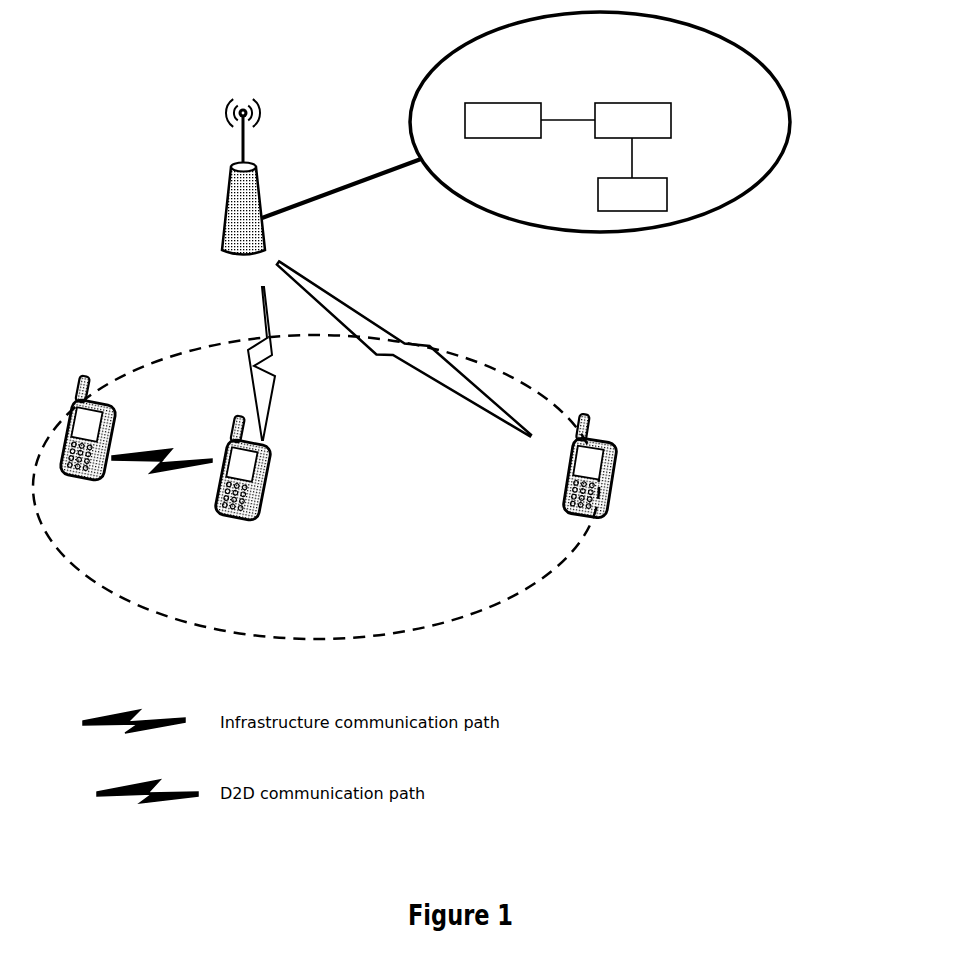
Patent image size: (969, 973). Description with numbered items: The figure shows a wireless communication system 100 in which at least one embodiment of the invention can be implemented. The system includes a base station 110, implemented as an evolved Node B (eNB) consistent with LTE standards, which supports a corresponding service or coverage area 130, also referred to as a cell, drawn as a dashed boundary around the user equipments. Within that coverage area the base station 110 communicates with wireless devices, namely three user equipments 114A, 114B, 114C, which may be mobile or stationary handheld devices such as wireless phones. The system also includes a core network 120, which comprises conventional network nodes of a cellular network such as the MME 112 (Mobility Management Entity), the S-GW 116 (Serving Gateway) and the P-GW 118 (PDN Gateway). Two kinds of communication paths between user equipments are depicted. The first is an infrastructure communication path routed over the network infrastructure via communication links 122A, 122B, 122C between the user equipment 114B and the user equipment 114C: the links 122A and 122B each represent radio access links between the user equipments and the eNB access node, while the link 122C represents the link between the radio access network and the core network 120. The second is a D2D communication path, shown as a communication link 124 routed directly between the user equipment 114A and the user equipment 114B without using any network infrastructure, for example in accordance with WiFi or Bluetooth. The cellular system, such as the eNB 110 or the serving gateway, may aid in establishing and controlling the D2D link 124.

The wireless communication system 100 is at (92, 93).
The base station 110 is at (258, 170).
The MME 112 is at (505, 101).
The user equipment 114A is at (120, 422).
The user equipment 114B is at (268, 494).
The user equipment 114C is at (616, 510).
The S-GW 116 is at (643, 101).
The P-GW 118 is at (667, 194).
The core network 120 is at (790, 124).
The communication link 122A is at (263, 391).
The communication link 122B is at (394, 322).
The communication link 122C is at (308, 198).
The communication link 124 is at (146, 471).
The coverage area 130 is at (432, 620).